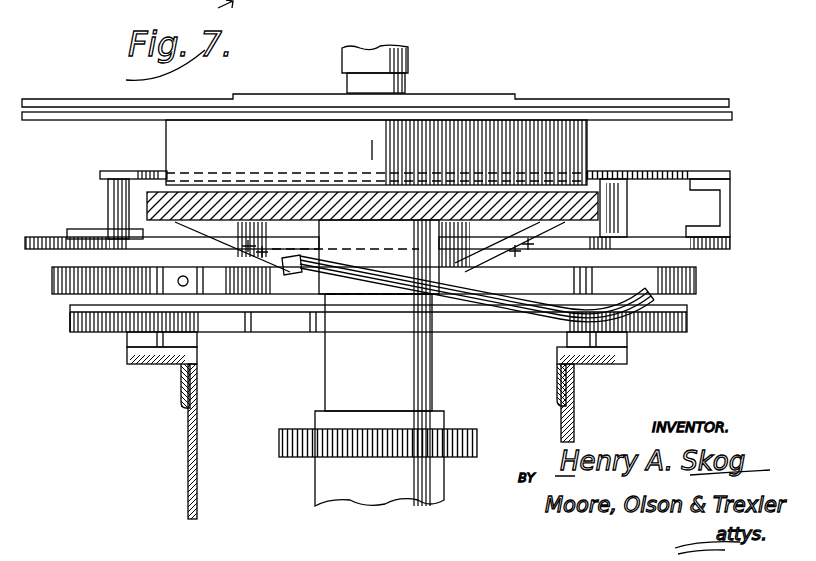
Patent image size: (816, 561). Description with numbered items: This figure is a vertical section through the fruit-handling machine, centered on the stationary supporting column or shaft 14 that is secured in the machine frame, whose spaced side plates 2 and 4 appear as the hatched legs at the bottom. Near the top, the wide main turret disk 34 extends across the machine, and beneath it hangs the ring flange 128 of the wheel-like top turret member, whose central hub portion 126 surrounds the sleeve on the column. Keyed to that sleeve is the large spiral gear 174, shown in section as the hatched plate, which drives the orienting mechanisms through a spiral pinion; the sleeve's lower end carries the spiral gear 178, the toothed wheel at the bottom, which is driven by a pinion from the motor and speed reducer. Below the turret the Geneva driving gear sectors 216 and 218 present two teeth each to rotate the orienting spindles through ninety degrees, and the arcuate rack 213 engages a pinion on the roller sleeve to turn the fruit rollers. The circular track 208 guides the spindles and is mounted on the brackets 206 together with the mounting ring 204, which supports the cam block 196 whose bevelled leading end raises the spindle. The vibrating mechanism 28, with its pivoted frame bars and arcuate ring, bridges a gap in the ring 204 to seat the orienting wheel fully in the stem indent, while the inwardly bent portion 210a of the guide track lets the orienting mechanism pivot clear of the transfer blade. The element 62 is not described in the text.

The stationary supporting column 14 is at (390, 58).
The table plate 62 is at (712, 100).
The turret disk 34 is at (690, 120).
The ring flange 128 is at (568, 132).
The spiral gear 174 is at (232, 185).
The arcuate rack 213 is at (706, 170).
The Geneva driving gear sector 218 is at (76, 230).
The Geneva driving gear sector 216 is at (728, 237).
The circular track 208 is at (698, 277).
The mounting ring 204 is at (688, 318).
The bracket 206 is at (630, 340).
The cam block 196 is at (176, 310).
The vibrating mechanism 28 is at (73, 318).
The side plate 4 is at (188, 445).
The side plate 2 is at (570, 425).
The bent portion of guide track 210a is at (378, 275).
The central hub portion 126 is at (440, 378).
The spiral gear 178 is at (445, 444).